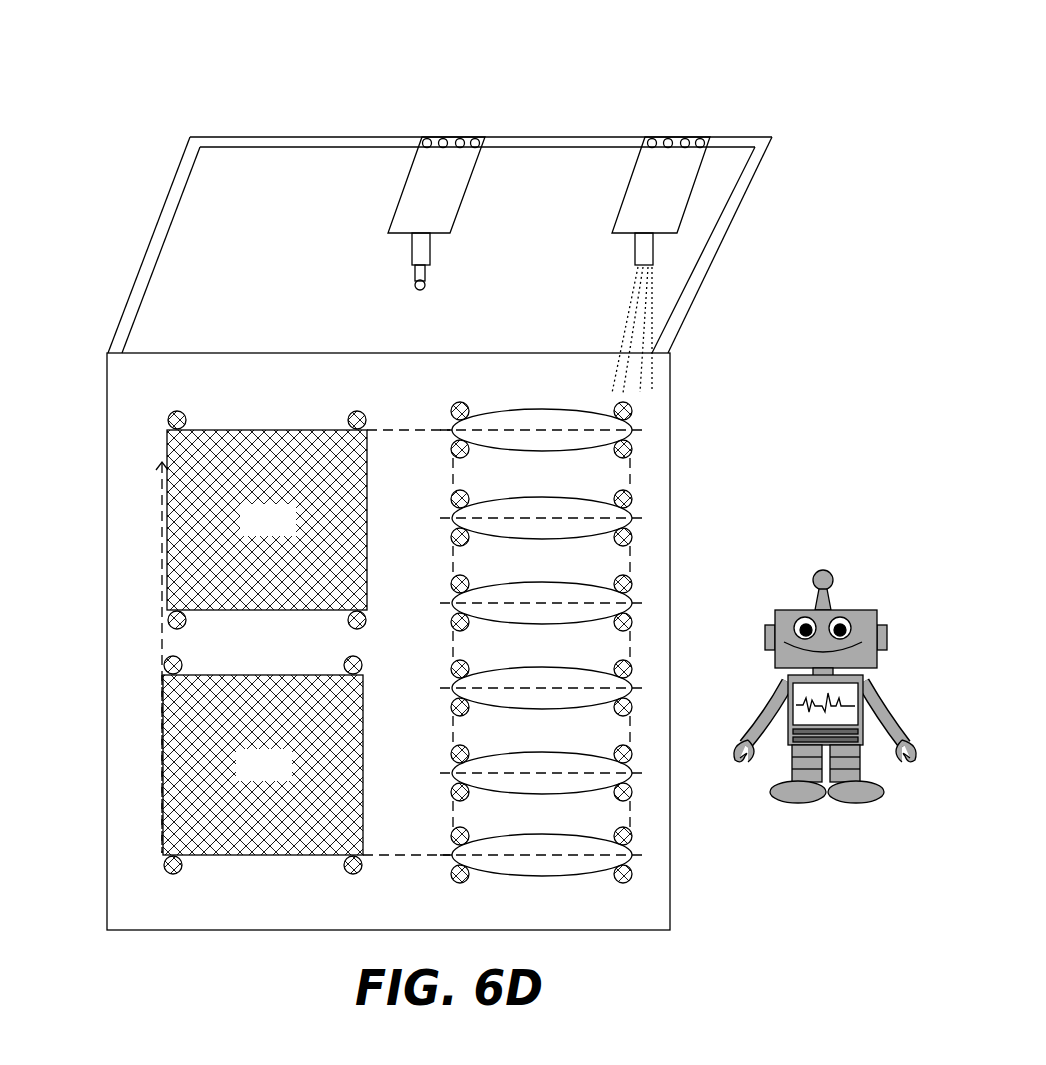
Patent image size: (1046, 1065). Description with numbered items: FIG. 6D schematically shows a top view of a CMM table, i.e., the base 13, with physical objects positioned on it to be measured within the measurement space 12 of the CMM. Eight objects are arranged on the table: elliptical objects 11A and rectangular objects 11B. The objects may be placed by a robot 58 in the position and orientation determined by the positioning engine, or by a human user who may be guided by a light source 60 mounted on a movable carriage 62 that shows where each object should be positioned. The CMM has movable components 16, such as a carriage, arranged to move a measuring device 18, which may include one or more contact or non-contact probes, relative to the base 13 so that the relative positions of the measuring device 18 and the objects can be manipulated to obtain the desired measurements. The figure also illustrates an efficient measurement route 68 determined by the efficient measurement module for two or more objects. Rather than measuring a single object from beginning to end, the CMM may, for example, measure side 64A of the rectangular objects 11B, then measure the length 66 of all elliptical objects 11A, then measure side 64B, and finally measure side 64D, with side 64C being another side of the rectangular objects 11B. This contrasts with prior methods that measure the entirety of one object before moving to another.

The measurement space 12 is at (118, 515).
The base 13 is at (152, 388).
The movable components 16 is at (372, 202).
The measuring device 18 is at (435, 187).
The movable carriage 62 is at (537, 147).
The light source 60 is at (660, 170).
The elliptical object 11A is at (591, 642).
The rectangular object 11B is at (265, 642).
The side 64A is at (262, 430).
The side 64B is at (263, 855).
The side 64C is at (163, 768).
The side 64D is at (167, 523).
The length 66 is at (553, 528).
The efficient measurement route 68 is at (400, 425).
The robot 58 is at (825, 713).